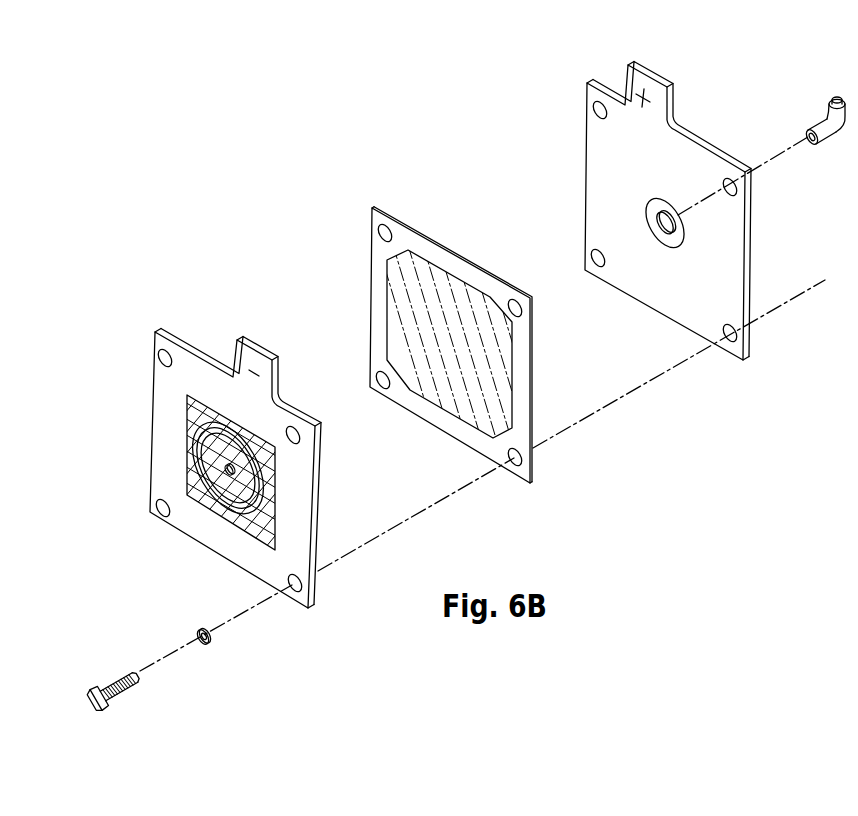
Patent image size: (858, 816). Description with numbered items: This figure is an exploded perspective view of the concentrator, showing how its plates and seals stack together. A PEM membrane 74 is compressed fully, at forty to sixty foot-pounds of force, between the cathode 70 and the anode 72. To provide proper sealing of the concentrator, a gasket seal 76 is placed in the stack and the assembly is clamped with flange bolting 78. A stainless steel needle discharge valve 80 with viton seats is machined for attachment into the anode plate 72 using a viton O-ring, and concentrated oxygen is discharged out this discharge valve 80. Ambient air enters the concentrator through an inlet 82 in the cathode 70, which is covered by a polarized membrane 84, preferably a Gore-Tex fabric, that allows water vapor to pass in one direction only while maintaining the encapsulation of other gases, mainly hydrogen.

The cathode 70 is at (167, 392).
The anode 72 is at (602, 172).
The PEM membrane 74 is at (450, 300).
The gasket seal 76 is at (380, 288).
The flange bolting 78 is at (110, 682).
The needle discharge valve 80 is at (813, 108).
The inlet 82 is at (222, 461).
The polarized membrane 84 is at (195, 492).